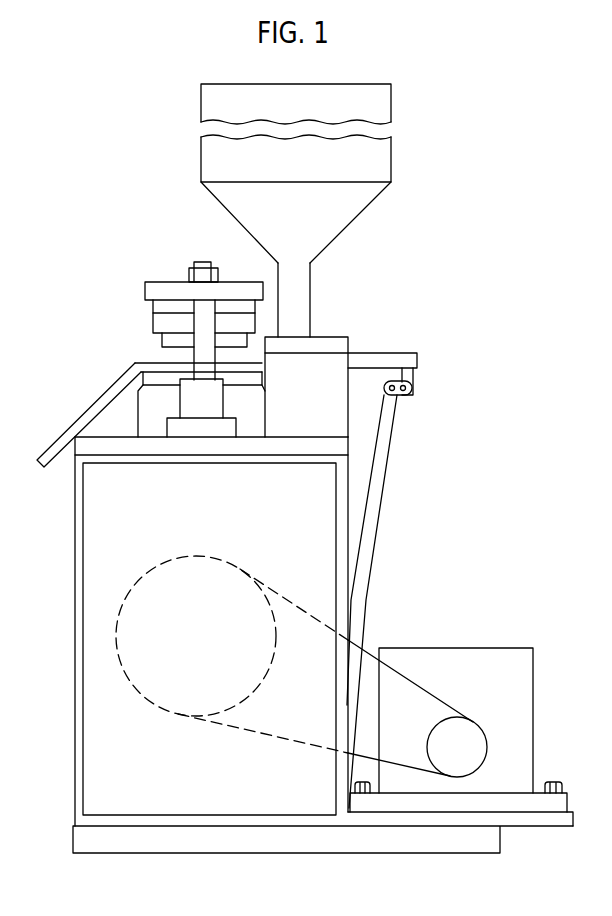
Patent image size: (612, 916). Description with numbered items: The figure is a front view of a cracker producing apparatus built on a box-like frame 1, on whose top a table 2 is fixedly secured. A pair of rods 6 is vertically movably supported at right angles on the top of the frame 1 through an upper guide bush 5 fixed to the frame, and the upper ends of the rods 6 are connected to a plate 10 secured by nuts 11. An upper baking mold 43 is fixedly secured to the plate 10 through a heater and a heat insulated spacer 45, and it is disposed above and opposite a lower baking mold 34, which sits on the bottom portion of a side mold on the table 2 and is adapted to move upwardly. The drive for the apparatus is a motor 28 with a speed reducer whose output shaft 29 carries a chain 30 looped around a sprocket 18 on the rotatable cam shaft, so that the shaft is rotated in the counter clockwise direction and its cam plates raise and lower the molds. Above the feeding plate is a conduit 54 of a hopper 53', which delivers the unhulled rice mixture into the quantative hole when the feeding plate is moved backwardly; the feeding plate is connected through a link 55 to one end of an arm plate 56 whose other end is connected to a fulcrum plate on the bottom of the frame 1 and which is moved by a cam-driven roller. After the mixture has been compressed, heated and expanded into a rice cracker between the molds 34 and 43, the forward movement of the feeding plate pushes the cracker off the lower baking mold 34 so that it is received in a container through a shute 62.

The box-like frame 1 is at (74, 523).
The table 2 is at (297, 443).
The upper guide bush 5 is at (224, 408).
The rods 6 is at (205, 315).
The plate 10 is at (176, 287).
The nuts 11 is at (218, 277).
The sprocket 18 is at (200, 558).
The motor 28 is at (475, 663).
The output shaft 29 is at (473, 738).
The chain 30 is at (420, 689).
The lower baking mold 34 is at (258, 385).
The upper baking mold 43 is at (157, 340).
The heat insulated spacer 45 is at (149, 303).
The hopper 53' is at (316, 173).
The conduit 54 is at (309, 300).
The link 55 is at (397, 395).
The arm plate 56 is at (372, 506).
The shute 62 is at (92, 404).